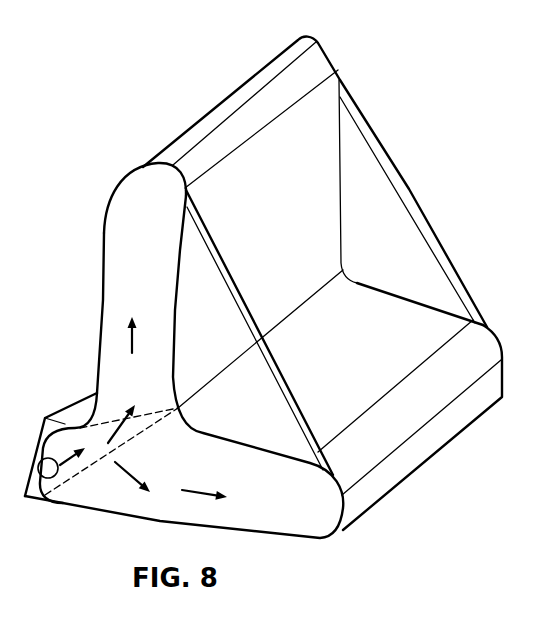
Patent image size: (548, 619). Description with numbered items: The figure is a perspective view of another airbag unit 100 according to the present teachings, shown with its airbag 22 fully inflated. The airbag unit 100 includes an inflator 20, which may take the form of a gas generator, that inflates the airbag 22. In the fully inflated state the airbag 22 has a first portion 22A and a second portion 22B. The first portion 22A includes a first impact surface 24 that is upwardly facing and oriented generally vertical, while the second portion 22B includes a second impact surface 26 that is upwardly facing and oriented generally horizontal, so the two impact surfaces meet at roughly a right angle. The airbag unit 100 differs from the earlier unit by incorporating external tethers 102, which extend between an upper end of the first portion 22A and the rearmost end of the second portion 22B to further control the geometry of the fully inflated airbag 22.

The airbag unit 100 is at (271, 291).
The airbag 22 is at (378, 513).
The first portion 22A is at (297, 147).
The second portion 22B is at (445, 328).
The external tethers 102 is at (409, 189).
The first impact surface 24 is at (283, 221).
The second impact surface 26 is at (352, 385).
The inflator 20 is at (58, 468).